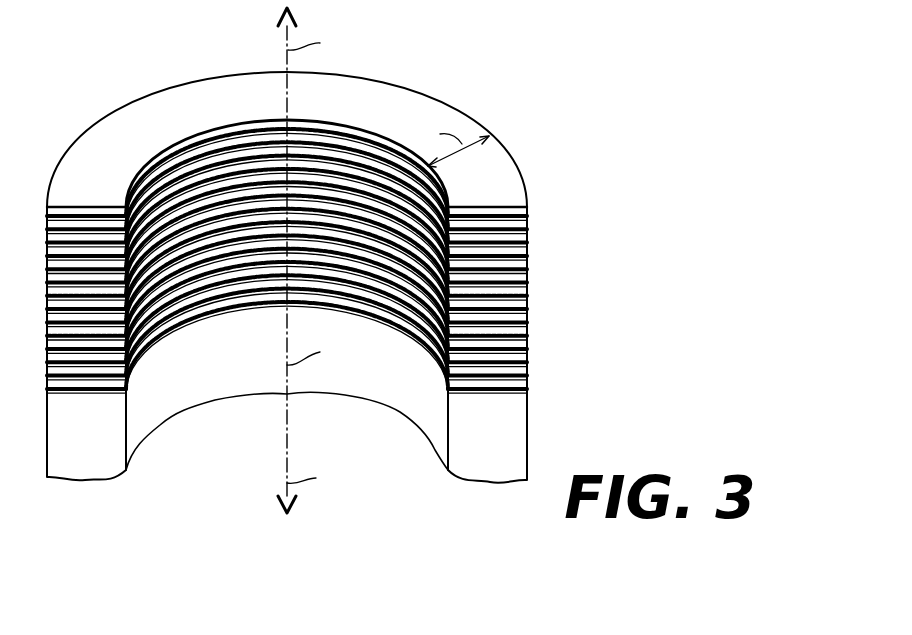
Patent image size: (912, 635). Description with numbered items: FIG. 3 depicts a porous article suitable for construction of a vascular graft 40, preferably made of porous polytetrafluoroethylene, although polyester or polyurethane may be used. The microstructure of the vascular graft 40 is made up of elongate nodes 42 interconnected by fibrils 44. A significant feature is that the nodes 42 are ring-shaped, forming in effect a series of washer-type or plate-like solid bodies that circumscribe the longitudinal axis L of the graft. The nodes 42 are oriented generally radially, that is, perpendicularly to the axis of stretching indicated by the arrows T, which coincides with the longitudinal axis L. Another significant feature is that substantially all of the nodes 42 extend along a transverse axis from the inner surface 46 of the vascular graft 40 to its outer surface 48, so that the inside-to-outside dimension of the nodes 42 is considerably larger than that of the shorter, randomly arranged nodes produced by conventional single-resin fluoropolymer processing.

The vascular graft 40 is at (332, 260).
The elongate nodes 42 is at (495, 169).
The fibrils 44 is at (530, 210).
The inner surface 46 is at (425, 404).
The outer surface 48 is at (527, 424).